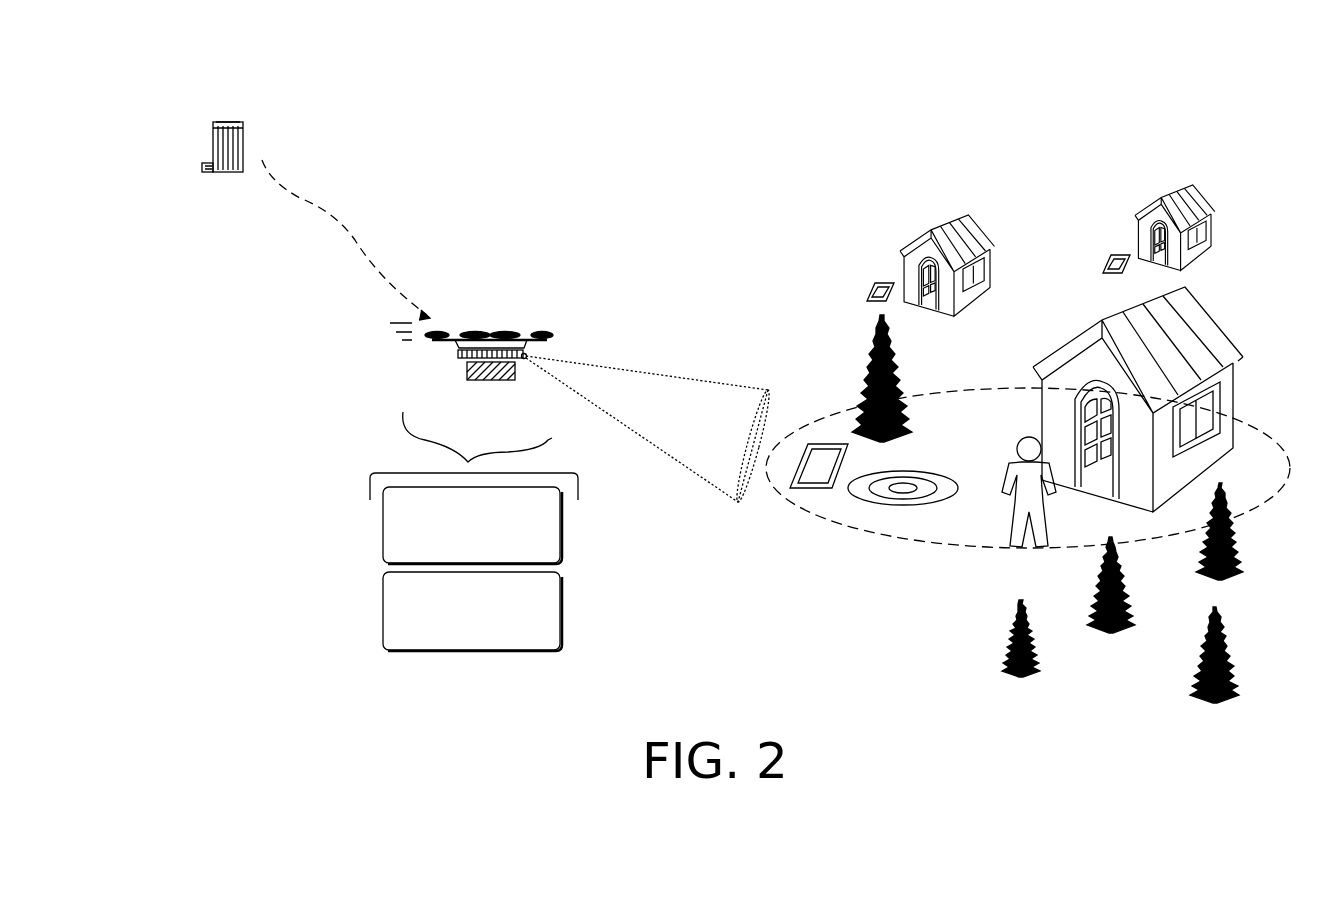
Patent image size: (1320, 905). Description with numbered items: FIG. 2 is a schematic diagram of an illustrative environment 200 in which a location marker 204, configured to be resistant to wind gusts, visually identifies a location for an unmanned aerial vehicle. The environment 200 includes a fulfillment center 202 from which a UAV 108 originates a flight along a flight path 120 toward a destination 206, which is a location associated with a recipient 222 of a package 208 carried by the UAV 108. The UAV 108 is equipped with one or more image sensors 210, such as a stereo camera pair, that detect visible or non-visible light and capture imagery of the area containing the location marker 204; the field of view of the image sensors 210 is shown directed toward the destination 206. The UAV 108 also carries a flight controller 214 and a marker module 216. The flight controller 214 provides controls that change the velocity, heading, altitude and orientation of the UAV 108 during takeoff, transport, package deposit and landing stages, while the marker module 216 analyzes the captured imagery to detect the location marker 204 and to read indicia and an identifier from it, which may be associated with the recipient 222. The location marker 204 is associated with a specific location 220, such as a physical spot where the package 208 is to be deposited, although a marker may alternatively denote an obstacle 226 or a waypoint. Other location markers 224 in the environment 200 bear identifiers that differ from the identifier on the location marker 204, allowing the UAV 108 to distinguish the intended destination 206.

The environment 200 is at (1110, 112).
The fulfillment center 202 is at (202, 173).
The flight path 120 is at (352, 245).
The unmanned aerial vehicle 108 is at (455, 341).
The package 208 is at (467, 372).
The image sensor 210 is at (524, 360).
The flight controller 214 is at (472, 525).
The marker module 216 is at (472, 611).
The destination 206 is at (1015, 388).
The location marker 204 is at (827, 462).
The specific location 220 is at (928, 472).
The recipient 222 is at (1018, 517).
The other location markers 224 is at (880, 283).
The obstacle 226 is at (860, 398).